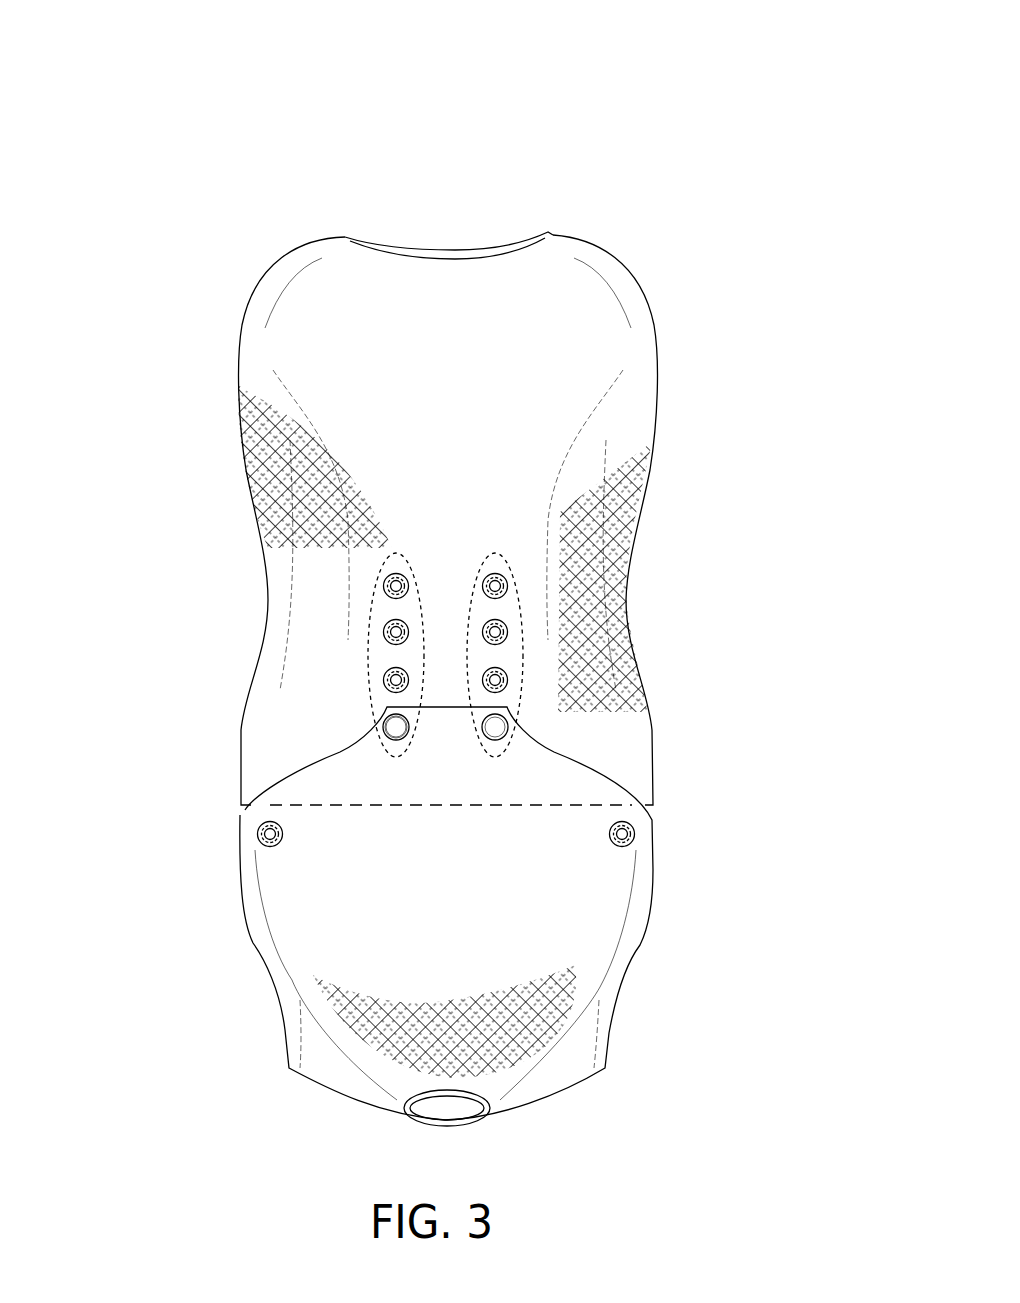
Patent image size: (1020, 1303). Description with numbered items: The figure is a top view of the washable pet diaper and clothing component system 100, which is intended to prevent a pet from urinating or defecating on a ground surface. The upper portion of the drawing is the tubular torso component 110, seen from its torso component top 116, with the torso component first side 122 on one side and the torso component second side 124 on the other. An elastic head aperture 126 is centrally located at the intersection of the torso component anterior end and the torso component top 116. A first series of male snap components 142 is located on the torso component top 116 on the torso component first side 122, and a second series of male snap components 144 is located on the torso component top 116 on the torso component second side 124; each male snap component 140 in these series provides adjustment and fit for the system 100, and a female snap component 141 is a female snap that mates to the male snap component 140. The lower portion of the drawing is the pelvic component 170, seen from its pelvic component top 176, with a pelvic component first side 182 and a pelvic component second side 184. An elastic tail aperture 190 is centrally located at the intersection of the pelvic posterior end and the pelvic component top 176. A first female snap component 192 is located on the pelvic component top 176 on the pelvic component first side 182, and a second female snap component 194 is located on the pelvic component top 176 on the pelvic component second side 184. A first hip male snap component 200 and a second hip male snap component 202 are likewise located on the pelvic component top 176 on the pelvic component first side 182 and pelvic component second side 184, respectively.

The washable pet diaper and clothing component system 100 is at (160, 113).
The tubular torso component 110 is at (593, 237).
The torso component top 116 is at (385, 345).
The torso component first side 122 is at (262, 362).
The torso component second side 124 is at (598, 584).
The elastic head aperture 126 is at (466, 260).
The male snap component 140 is at (392, 587).
The female snap component 141 is at (390, 730).
The first series of male snap components 142 is at (389, 556).
The second series of male snap components 144 is at (506, 558).
The first female snap component 192 is at (392, 730).
The second female snap component 194 is at (487, 731).
The pelvic component 170 is at (243, 928).
The pelvic component top 176 is at (415, 908).
The pelvic component first side 182 is at (283, 878).
The pelvic component second side 184 is at (607, 913).
The elastic tail aperture 190 is at (492, 1112).
The first hip male snap component 200 is at (262, 835).
The second hip male snap component 202 is at (632, 833).